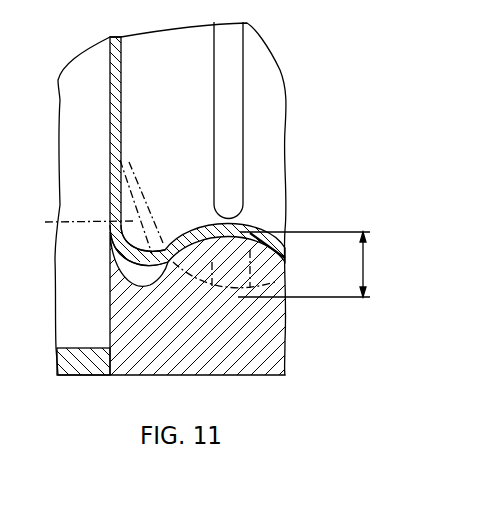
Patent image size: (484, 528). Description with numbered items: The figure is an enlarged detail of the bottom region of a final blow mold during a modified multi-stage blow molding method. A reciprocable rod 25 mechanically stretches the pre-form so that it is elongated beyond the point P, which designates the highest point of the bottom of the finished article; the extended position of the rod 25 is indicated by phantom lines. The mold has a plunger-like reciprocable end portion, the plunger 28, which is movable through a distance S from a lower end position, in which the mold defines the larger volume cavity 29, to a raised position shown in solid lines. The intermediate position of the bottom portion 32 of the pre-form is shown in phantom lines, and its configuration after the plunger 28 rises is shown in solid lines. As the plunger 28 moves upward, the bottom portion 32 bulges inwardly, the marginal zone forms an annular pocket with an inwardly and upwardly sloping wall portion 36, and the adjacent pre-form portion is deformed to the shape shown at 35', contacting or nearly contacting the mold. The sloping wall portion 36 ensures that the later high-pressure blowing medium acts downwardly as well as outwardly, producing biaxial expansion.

The rod 25 is at (230, 70).
The deformed pre-form portion 35' is at (242, 151).
The inwardly and upwardly sloping wall portion 36 is at (167, 250).
The bottom portion of the pre-form 32 is at (76, 222).
The plunger 28 is at (215, 296).
The larger volume cavity 29 is at (125, 352).
The point P is at (243, 232).
The distance s S is at (312, 264).